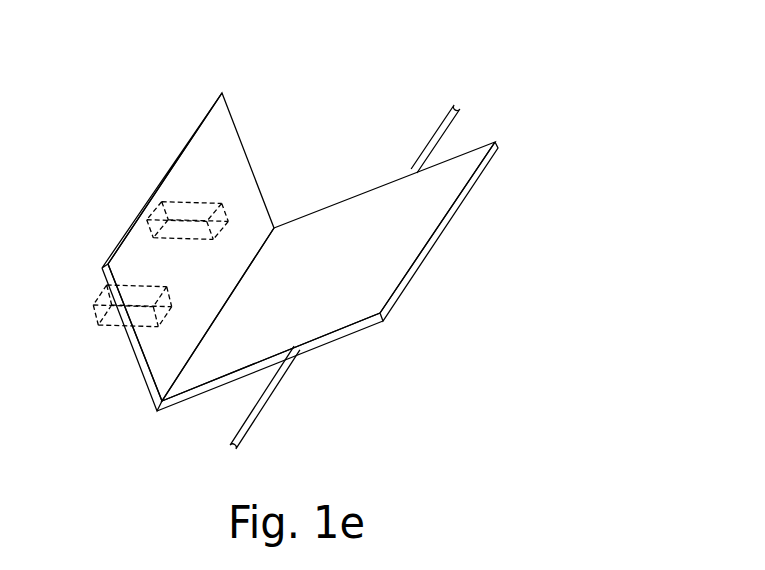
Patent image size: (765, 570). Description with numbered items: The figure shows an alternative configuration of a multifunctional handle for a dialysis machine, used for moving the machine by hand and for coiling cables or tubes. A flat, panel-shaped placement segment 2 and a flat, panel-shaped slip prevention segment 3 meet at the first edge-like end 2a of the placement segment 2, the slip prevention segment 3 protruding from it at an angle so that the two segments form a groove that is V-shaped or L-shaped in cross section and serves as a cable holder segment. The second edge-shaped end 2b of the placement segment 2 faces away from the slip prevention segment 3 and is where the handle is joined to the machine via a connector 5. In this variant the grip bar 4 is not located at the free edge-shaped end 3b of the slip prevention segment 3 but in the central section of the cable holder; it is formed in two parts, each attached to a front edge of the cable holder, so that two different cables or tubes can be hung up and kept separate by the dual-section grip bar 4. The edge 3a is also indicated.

The placement segment 2 is at (233, 162).
The first edge-like end of the placement segment 2a is at (145, 390).
The second edge-shaped end of the placement segment 2b is at (130, 222).
The slip prevention segment 3 is at (413, 238).
The inner edge of second plate 3a is at (167, 405).
The free edge-shaped end of the slip prevention segment 3b is at (467, 187).
The grip bar 4 is at (430, 137).
The connector 5 is at (192, 212).